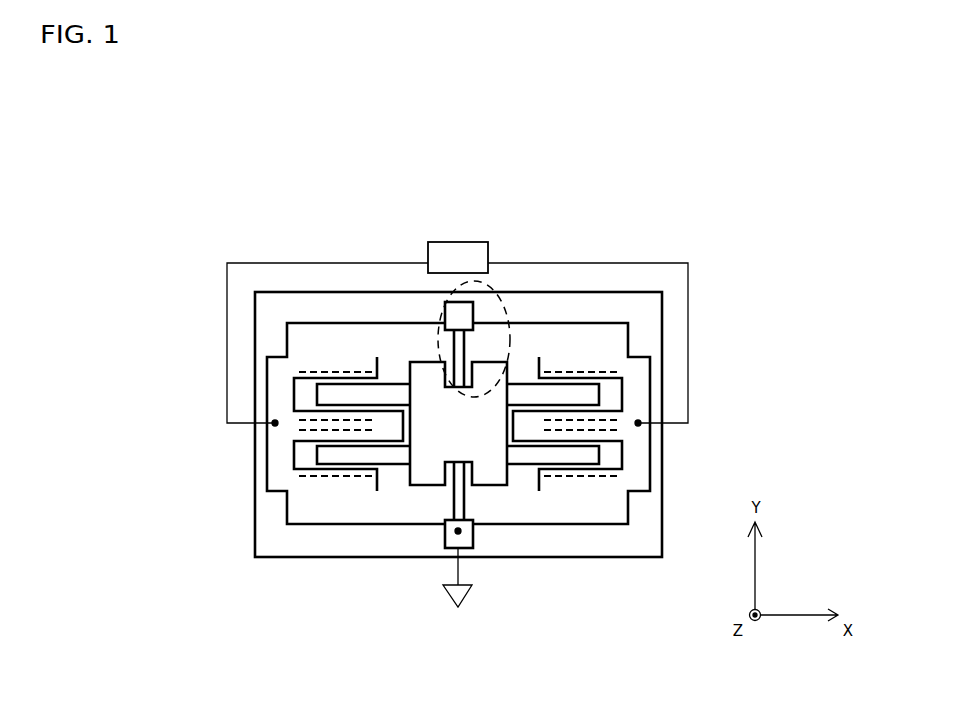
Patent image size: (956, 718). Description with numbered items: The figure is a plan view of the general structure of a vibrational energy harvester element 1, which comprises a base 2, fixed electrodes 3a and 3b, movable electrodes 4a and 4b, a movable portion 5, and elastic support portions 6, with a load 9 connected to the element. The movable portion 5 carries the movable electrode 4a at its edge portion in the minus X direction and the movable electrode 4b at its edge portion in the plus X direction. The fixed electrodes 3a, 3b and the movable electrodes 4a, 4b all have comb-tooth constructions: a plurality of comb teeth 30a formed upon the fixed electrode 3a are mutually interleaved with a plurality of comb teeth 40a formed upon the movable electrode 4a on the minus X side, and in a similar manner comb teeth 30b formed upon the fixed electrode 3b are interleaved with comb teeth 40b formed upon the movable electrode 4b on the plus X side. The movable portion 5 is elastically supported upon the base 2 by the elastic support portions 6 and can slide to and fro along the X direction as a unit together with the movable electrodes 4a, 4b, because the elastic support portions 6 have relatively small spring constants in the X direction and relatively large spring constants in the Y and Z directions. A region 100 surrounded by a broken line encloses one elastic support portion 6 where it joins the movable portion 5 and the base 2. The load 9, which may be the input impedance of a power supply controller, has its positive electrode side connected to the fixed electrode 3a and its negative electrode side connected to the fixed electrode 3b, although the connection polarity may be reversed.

The vibrational energy harvester element 1 is at (737, 181).
The base 2 is at (275, 548).
The fixed electrode 3a is at (277, 470).
The fixed electrode 3b is at (638, 385).
The movable electrode 4a is at (405, 447).
The movable electrode 4b is at (512, 390).
The movable portion 5 is at (425, 375).
The elastic support portion 6 is at (453, 352).
The load 9 is at (446, 253).
The comb teeth 30a is at (312, 482).
The comb teeth 30b is at (607, 367).
The comb teeth 40a is at (350, 447).
The comb teeth 40b is at (550, 395).
The region 100 is at (510, 310).